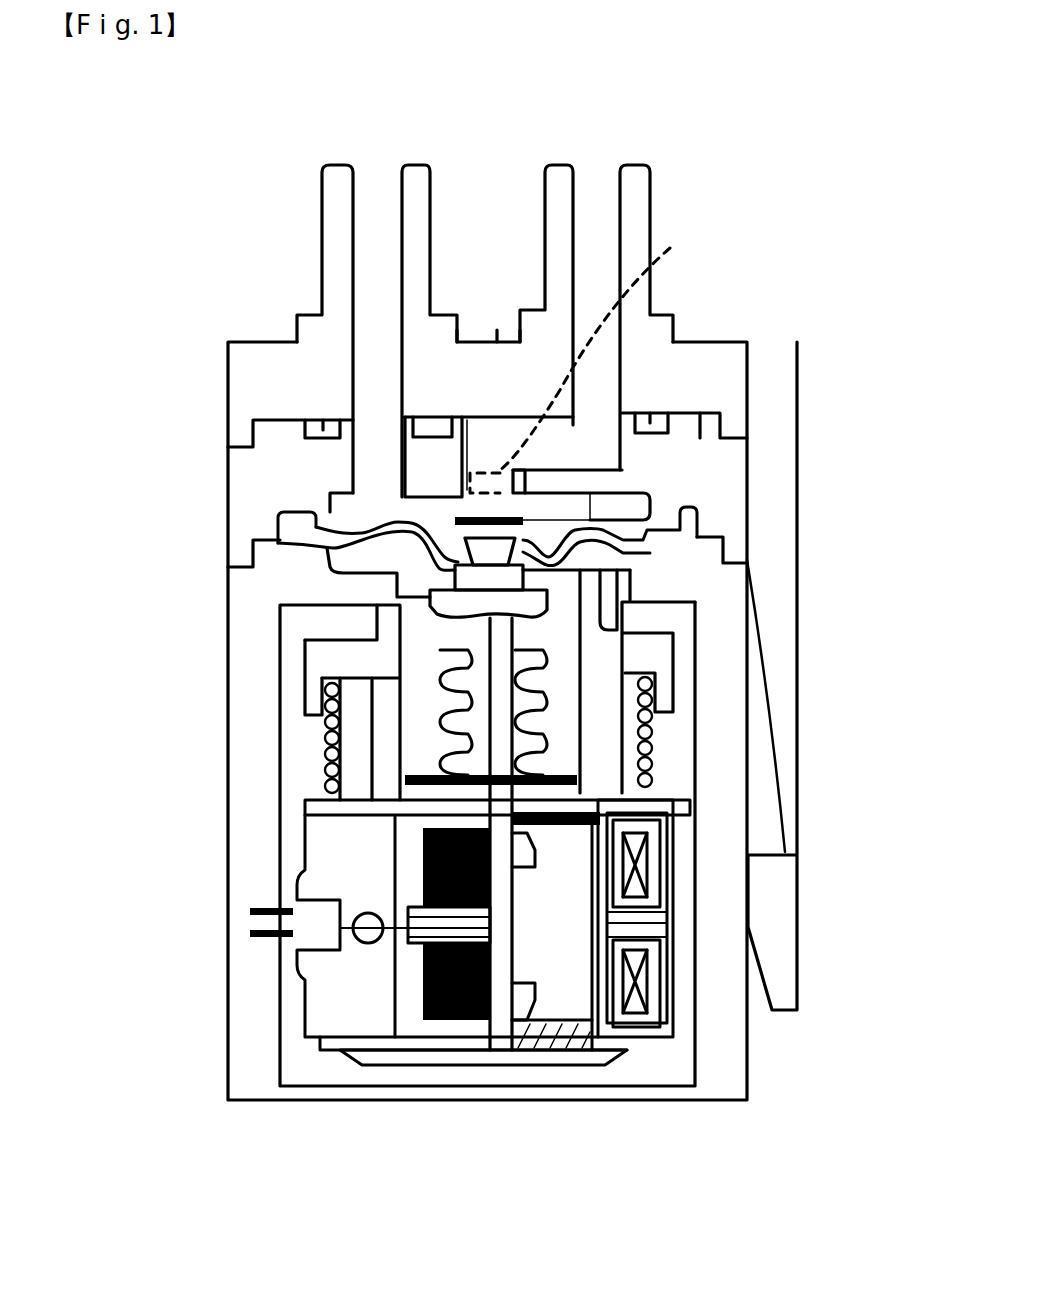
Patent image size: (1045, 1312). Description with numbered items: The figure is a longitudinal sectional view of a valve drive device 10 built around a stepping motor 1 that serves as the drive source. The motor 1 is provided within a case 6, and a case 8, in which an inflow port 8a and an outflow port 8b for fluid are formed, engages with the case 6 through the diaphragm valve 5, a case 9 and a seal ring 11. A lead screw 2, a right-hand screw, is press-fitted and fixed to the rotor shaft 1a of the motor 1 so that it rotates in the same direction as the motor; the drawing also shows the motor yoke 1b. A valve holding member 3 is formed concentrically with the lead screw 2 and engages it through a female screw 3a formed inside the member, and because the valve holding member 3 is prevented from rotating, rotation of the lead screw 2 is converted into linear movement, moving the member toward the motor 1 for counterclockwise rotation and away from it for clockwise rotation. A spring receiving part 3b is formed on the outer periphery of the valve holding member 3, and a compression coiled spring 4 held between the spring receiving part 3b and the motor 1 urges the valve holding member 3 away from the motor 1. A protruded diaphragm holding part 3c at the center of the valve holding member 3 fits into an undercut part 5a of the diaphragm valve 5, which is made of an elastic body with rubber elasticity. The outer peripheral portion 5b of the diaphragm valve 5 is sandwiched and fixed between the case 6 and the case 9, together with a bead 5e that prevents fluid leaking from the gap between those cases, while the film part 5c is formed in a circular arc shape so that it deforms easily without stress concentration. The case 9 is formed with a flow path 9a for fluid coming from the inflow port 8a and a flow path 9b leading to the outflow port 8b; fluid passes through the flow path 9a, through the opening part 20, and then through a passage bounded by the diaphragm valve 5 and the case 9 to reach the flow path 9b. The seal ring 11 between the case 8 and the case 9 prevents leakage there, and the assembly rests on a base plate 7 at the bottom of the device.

The stepping motor 1 is at (678, 1005).
The rotor shaft 1a is at (497, 728).
The yoke plate 1b is at (557, 786).
The lead screw 2 is at (560, 752).
The valve holding member 3 is at (298, 650).
The female screw 3a is at (543, 658).
The spring receiving part 3b is at (322, 670).
The diaphragm holding part 3c is at (485, 515).
The spring 4 is at (325, 757).
The diaphragm valve 5 is at (273, 527).
The undercut part 5a is at (520, 488).
The outer peripheral portion 5b is at (697, 525).
The film part 5c is at (713, 435).
The bead 5e is at (690, 542).
The case 6 is at (268, 558).
The base plate 7 is at (424, 1072).
The case 8 is at (245, 382).
The inflow port 8a is at (605, 205).
The outflow port 8b is at (385, 205).
The case 9 is at (710, 498).
The flow path 9a is at (597, 453).
The flow path 9b is at (380, 480).
The valve drive device 10 is at (213, 1113).
The seal ring 11 is at (318, 420).
The opening part 20 is at (591, 347).